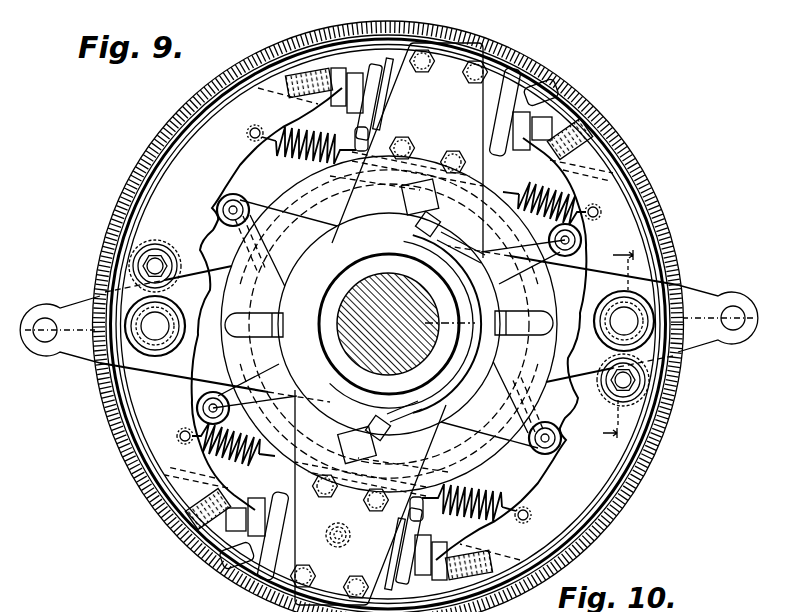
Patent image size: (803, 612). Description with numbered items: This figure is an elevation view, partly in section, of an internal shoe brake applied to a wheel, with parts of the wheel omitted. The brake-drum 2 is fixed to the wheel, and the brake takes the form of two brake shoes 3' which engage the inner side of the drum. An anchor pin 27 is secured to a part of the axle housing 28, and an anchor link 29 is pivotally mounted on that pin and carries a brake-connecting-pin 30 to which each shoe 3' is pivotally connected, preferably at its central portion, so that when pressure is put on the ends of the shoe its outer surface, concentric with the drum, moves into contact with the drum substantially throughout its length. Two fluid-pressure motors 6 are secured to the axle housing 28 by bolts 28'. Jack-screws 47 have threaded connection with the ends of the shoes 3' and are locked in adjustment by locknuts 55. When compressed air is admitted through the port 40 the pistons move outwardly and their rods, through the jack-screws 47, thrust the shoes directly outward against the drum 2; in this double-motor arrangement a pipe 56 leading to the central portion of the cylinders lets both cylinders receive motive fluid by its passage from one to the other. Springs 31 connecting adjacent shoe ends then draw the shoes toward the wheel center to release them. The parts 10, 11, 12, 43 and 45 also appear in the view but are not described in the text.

The brake-drum 2 is at (137, 174).
The brake shoe 3' is at (384, 324).
The fluid-pressure motor 6 is at (504, 70).
The axle shaft 10 is at (424, 313).
The hub 11 is at (367, 413).
The clearance 12 is at (618, 346).
The anchor pin 27 is at (143, 334).
The axle housing 28 is at (389, 316).
The bolts 28' is at (389, 324).
The anchor link 29 is at (165, 307).
The brake-connecting-pin 30 is at (150, 268).
The spring 31 is at (565, 196).
The port 40 is at (350, 532).
The actuating lever 43 is at (376, 62).
The strut 45 is at (389, 324).
The jack-screw 47 is at (353, 133).
The locknut 55 is at (338, 68).
The pipe 56 is at (458, 392).